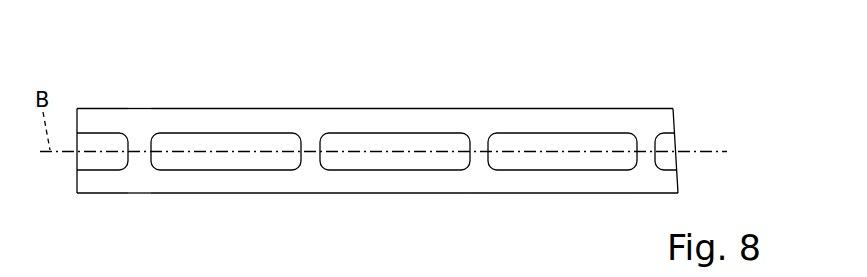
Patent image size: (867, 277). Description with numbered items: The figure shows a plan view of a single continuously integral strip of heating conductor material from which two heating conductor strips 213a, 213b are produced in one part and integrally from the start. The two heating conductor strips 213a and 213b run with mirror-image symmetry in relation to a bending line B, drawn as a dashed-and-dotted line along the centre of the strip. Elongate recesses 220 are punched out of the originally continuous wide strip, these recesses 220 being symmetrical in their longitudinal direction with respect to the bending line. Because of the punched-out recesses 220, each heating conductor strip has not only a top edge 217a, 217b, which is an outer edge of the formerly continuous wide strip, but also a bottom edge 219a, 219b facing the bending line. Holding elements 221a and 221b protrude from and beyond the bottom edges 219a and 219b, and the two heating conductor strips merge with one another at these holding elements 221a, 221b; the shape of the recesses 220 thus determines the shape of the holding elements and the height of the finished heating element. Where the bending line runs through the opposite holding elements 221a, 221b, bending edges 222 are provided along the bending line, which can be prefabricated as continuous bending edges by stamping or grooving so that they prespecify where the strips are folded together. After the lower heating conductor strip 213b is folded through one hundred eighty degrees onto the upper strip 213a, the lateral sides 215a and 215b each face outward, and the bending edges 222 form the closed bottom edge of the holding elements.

The recess 220 is at (172, 143).
The holding element 221a is at (143, 150).
The holding element 221b is at (143, 158).
The heating conductor strip 213a is at (207, 129).
The heating conductor strip 213b is at (243, 182).
The top edge 217a is at (332, 108).
The top edge 217b is at (363, 193).
The bottom edge 219a is at (382, 133).
The bottom edge 219b is at (448, 170).
The bending edge 222 is at (478, 150).
The lateral side 215a is at (578, 120).
The lateral side 215b is at (565, 192).